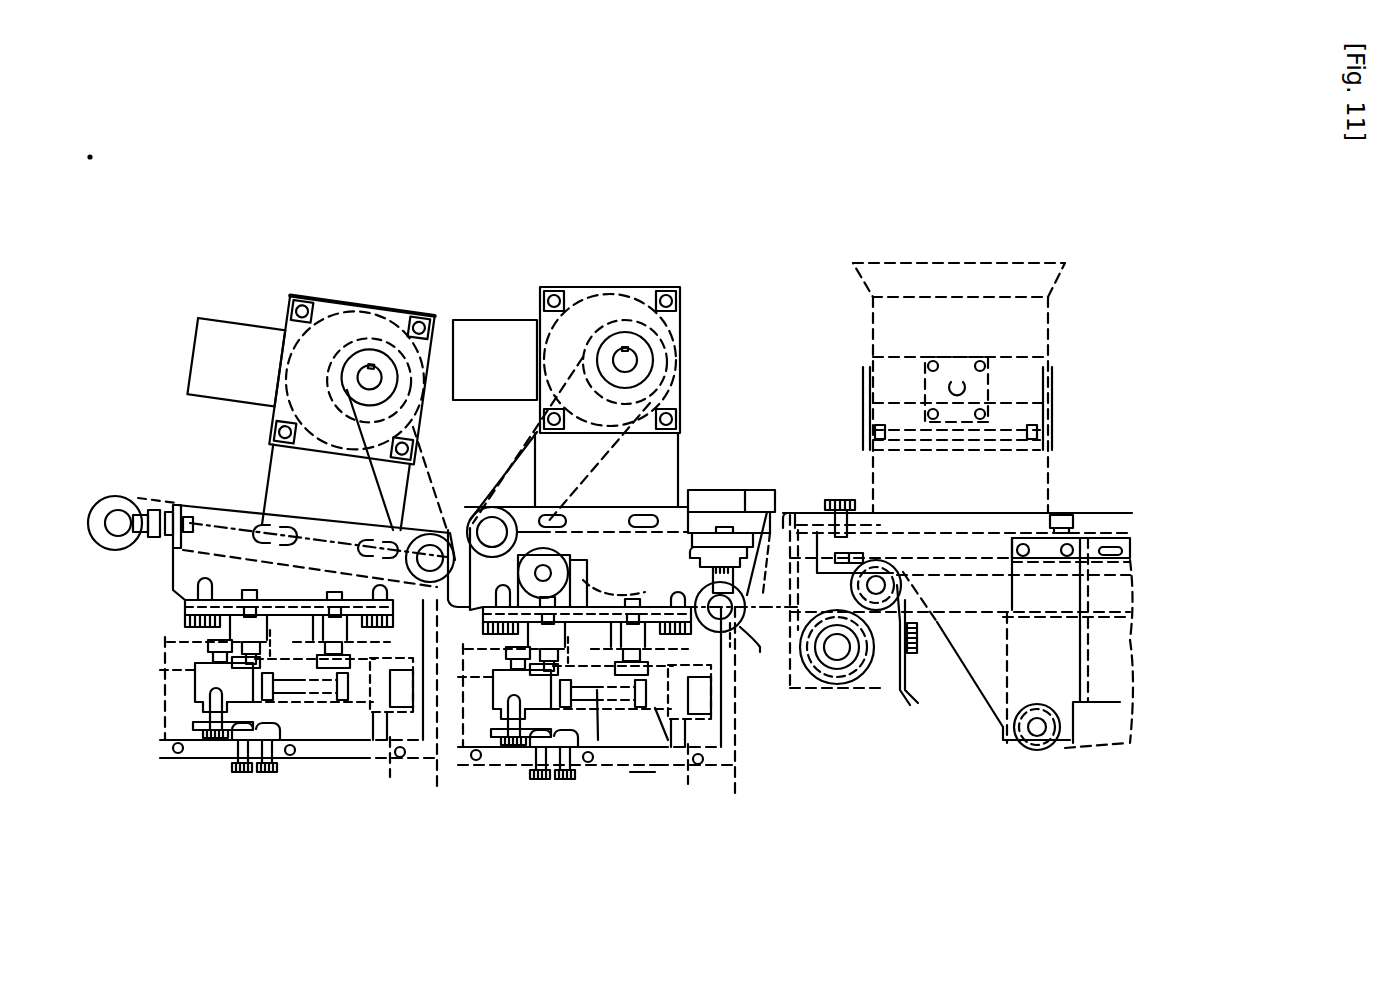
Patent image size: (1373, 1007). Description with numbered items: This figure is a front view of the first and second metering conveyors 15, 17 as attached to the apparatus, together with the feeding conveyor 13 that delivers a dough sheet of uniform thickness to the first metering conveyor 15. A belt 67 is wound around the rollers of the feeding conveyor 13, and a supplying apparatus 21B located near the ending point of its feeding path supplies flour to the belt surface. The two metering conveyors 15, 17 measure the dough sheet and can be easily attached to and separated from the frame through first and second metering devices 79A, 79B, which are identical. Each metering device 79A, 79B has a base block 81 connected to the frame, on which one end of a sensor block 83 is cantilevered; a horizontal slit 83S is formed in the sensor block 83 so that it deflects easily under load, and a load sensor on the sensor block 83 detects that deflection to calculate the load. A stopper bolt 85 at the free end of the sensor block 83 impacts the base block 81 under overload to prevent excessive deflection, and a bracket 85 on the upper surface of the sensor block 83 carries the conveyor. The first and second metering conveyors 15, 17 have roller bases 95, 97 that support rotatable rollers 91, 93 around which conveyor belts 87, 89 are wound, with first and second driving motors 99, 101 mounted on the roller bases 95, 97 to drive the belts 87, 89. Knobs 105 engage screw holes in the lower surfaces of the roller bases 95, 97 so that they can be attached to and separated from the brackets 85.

The feeding conveyor 13 is at (1095, 508).
The first metering conveyor 15 is at (612, 359).
The second metering conveyor 17 is at (328, 369).
The supplying apparatus 21B is at (1048, 335).
The belt 67 is at (965, 680).
The first metering device 79A is at (738, 742).
The second metering device 79B is at (147, 760).
The base block 81 is at (642, 774).
The sensor block 83 is at (668, 740).
The horizontal slit 83S is at (598, 740).
The stopper bolt 85 is at (250, 681).
The conveyor belt 87 is at (622, 592).
The conveyor belt 89 is at (152, 553).
The roller 91 is at (740, 630).
The roller 93 is at (121, 500).
The roller base 95 is at (682, 512).
The roller base 97 is at (227, 510).
The first driving motor 99 is at (608, 300).
The second driving motor 101 is at (400, 312).
The knob 105 is at (186, 628).